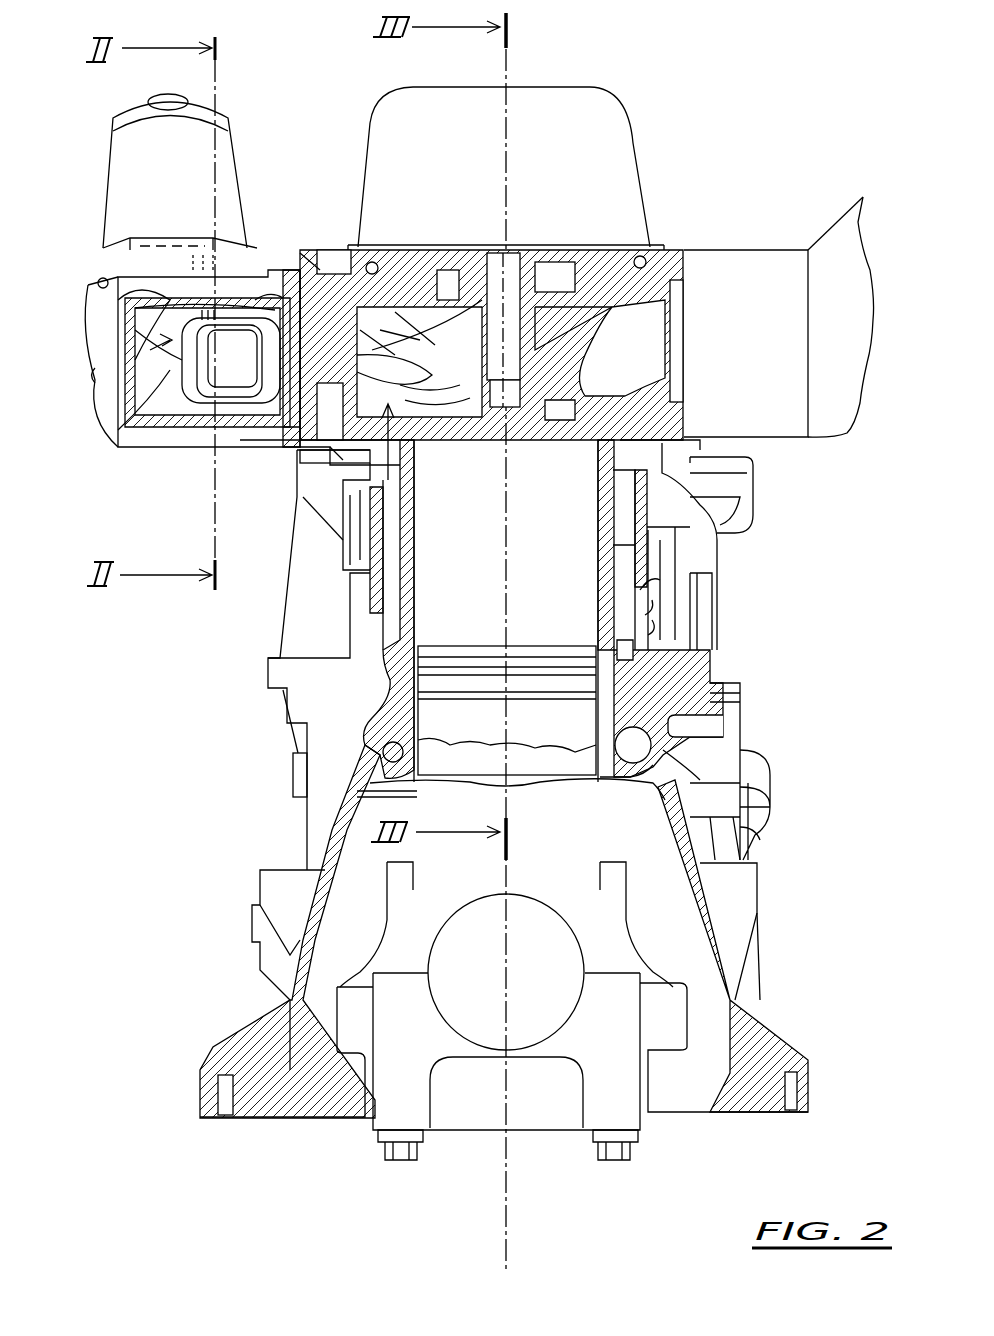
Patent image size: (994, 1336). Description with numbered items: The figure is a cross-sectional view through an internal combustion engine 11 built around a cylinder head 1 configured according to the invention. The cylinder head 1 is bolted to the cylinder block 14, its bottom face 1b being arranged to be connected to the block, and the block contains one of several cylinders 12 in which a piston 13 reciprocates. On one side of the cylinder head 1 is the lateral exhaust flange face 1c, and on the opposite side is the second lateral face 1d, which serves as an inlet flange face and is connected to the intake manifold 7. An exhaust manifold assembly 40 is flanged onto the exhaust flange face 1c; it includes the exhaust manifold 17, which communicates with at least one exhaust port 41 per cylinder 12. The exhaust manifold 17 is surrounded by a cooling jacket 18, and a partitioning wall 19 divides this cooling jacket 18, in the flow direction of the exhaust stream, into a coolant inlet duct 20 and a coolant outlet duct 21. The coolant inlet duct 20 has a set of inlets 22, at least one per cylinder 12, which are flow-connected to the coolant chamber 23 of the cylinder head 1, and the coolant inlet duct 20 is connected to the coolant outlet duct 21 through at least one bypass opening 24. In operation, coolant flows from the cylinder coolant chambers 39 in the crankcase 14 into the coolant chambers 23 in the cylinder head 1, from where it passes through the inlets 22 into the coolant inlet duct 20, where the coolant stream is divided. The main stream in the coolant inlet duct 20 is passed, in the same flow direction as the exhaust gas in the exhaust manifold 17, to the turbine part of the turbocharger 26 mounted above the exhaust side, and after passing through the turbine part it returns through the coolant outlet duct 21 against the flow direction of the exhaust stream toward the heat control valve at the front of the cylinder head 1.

The cylinder head 1 is at (690, 408).
The bottom face 1b is at (655, 472).
The lateral exhaust flange face 1c is at (300, 440).
The second lateral face 1d is at (687, 265).
The intake manifold 7 is at (778, 267).
The internal combustion engine 11 is at (713, 670).
The cylinder 12 is at (385, 575).
The piston 13 is at (455, 648).
The cylinder block 14 is at (720, 712).
The exhaust manifold 17 is at (232, 366).
The cooling jacket 18 is at (148, 350).
The partitioning wall 19 is at (258, 311).
The coolant inlet duct 20 is at (224, 300).
The coolant outlet duct 21 is at (270, 405).
The inlets 22 is at (297, 262).
The coolant chamber 23 is at (443, 322).
The bypass opening 24 is at (265, 437).
The turbocharger 26 is at (95, 204).
The cylinder coolant chambers 39 is at (395, 622).
The exhaust manifold assembly 40 is at (133, 444).
The exhaust port 41 is at (405, 440).